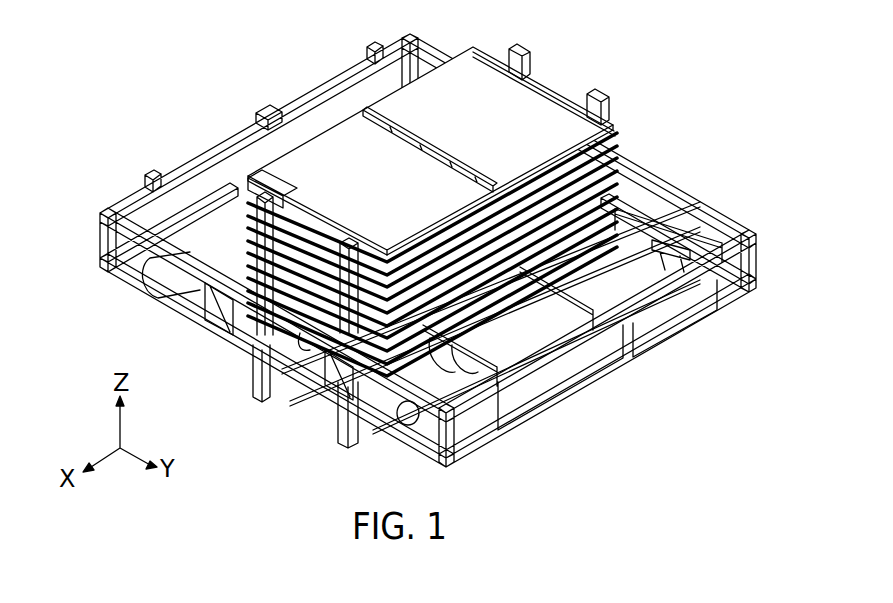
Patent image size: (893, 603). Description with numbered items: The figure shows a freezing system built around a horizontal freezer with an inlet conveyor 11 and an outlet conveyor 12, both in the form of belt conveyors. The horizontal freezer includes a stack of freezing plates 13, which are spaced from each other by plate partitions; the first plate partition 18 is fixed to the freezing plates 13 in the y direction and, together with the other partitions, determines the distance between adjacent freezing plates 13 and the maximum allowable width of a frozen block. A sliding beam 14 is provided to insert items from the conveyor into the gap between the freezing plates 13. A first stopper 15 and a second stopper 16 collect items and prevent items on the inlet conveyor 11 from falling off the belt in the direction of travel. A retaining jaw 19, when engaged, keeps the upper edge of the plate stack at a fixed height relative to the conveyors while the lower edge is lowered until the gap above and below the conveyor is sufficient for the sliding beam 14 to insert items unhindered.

The inlet conveyor 11 is at (683, 227).
The outlet conveyor 12 is at (135, 262).
The freezing plates 13 is at (523, 144).
The sliding beam 14 is at (655, 314).
The first stopper 15 is at (712, 217).
The second stopper 16 is at (506, 393).
The first plate partition 18 is at (367, 110).
The retaining jaw 19 is at (312, 402).